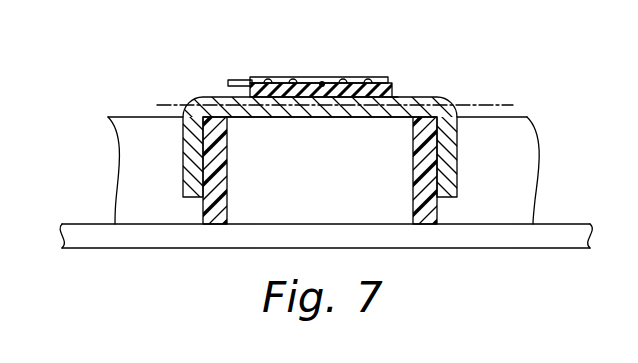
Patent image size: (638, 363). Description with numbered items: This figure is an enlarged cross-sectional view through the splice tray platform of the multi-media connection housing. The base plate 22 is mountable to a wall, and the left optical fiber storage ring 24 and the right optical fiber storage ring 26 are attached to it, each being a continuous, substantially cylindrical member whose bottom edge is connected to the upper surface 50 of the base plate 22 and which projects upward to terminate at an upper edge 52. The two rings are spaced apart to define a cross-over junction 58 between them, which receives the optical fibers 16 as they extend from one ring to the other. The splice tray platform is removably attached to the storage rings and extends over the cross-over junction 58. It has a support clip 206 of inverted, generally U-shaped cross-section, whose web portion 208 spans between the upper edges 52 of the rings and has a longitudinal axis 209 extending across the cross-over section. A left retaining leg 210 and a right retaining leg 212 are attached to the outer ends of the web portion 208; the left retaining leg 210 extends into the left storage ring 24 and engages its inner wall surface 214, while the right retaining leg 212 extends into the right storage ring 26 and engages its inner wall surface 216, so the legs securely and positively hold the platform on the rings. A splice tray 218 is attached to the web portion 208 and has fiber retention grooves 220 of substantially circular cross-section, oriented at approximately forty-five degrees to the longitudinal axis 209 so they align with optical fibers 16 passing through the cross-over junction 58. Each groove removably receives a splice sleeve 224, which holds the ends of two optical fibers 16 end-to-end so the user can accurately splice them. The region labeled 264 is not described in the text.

The optical fibers 16 is at (322, 82).
The base plate 22 is at (521, 236).
The left optical fiber storage ring 24 is at (143, 137).
The right optical fiber storage ring 26 is at (520, 133).
The upper surface 50 is at (97, 223).
The upper edge 52 is at (123, 117).
The cross-over junction 58 is at (257, 197).
The support clip 206 is at (210, 100).
The web portion 208 is at (302, 108).
The longitudinal axis 209 is at (480, 101).
The left retaining leg 210 is at (183, 153).
The right retaining leg 212 is at (445, 150).
The inner wall surface of the left storage ring 214 is at (203, 212).
The inner wall surface of the right storage ring 216 is at (437, 209).
The splice tray 218 is at (352, 83).
The fiber retention grooves 220 is at (267, 82).
The splice sleeve 224 is at (310, 78).
The interface region 264 is at (396, 95).